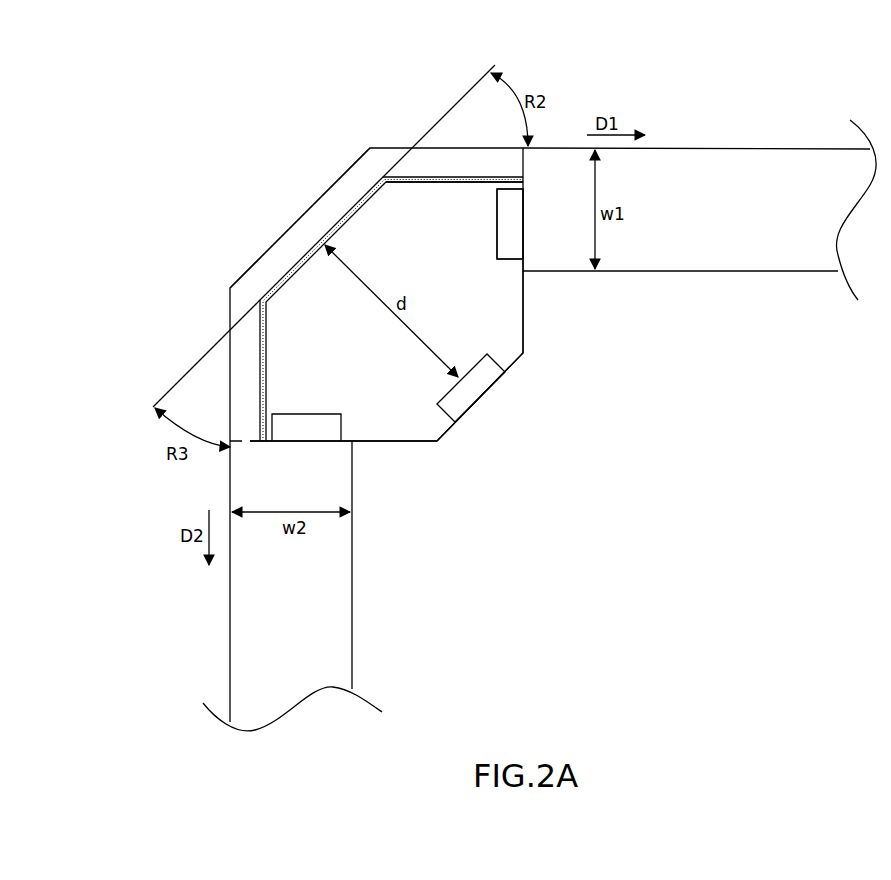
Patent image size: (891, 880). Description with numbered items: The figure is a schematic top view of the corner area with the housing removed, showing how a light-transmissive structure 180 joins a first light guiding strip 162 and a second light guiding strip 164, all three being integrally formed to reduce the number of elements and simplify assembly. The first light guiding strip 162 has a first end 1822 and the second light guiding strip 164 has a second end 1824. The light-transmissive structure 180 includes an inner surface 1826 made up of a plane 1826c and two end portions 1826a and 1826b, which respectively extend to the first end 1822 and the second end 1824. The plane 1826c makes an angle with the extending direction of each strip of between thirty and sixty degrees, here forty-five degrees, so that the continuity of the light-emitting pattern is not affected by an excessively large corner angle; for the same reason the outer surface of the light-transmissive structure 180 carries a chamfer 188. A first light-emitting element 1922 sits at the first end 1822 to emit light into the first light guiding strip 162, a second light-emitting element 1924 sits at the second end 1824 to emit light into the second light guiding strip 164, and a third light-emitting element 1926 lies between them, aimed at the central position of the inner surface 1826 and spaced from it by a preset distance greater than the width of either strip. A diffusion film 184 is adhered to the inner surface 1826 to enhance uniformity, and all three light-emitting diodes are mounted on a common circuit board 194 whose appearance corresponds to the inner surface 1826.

The light-transmissive structure 180 is at (146, 124).
The chamfer 188 is at (230, 250).
The circuit board 194 is at (510, 331).
The inner surface 1826 is at (365, 237).
The end portion 1826a is at (394, 261).
The end portion 1826b is at (285, 273).
The plane 1826c is at (268, 330).
The diffusion film 184 is at (443, 183).
The first end 1822 is at (523, 211).
The first light-emitting element 1922 is at (509, 252).
The third light-emitting element 1926 is at (475, 392).
The second end 1824 is at (332, 427).
The second light-emitting element 1924 is at (293, 442).
The first light guiding strip 162 is at (753, 262).
The second light guiding strip 164 is at (342, 608).